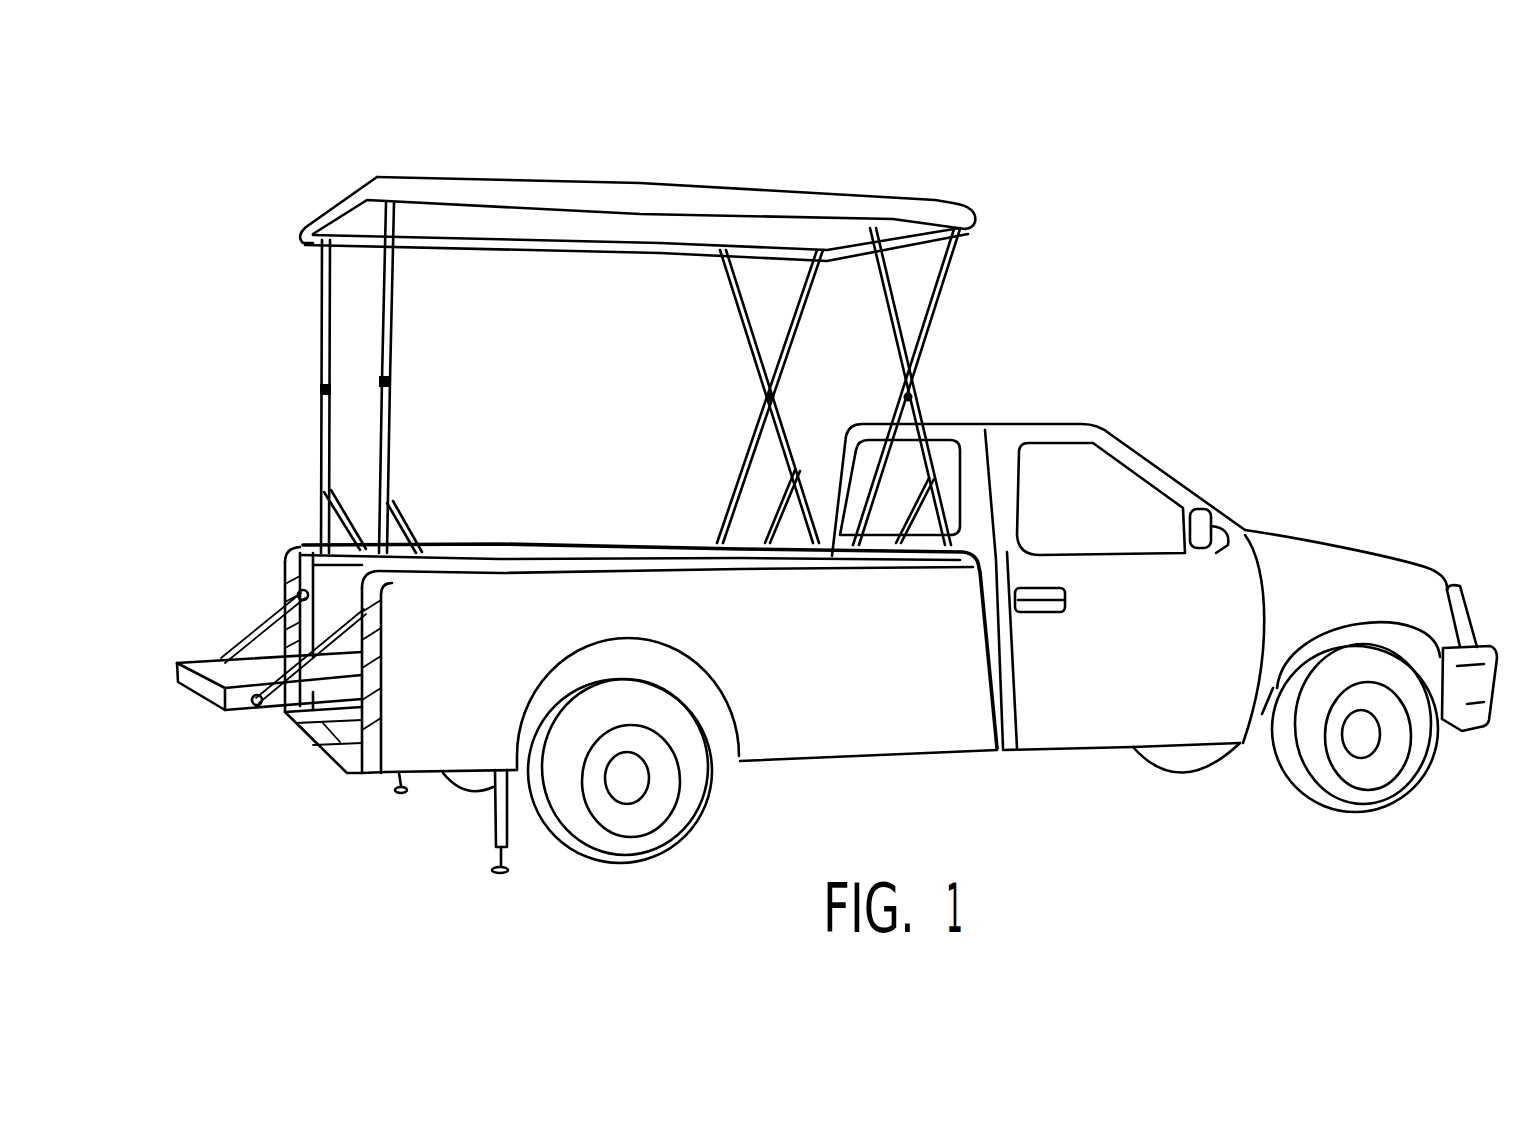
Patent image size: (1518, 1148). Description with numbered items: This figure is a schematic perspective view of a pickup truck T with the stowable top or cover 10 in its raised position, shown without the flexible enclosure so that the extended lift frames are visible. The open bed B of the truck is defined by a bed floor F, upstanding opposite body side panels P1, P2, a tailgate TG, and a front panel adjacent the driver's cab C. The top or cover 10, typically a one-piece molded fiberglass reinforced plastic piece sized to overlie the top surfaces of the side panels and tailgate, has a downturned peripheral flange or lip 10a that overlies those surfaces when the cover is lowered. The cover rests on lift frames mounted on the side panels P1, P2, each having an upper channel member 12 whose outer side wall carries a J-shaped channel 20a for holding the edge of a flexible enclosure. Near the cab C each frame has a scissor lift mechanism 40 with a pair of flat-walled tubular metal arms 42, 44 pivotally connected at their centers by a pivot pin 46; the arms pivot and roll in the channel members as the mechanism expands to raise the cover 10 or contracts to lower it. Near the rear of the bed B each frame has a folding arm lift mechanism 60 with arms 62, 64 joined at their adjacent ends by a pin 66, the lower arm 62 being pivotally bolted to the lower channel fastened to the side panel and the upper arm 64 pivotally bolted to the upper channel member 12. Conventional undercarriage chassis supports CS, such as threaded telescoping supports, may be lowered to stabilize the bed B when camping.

The stowable top or cover 10 is at (745, 183).
The downturned peripheral flange or lip 10a is at (470, 198).
The upper channel member 12 is at (563, 233).
The J-shaped channel 20a is at (898, 212).
The scissor lift mechanism 40 is at (753, 373).
The scissor arm 42 is at (940, 289).
The scissor arm 44 is at (738, 282).
The pivot pin 46 is at (777, 393).
The folding arm lift mechanism 60 is at (391, 420).
The folding arm 62 is at (377, 462).
The folding arm 64 is at (392, 262).
The pin 66 is at (378, 383).
The open bed B is at (548, 553).
The driver's cab C is at (1069, 467).
The truck T is at (1365, 535).
The tailgate TG is at (208, 657).
The bed floor F is at (277, 717).
The undercarriage chassis supports CS is at (493, 840).
The body side panel P1 is at (660, 545).
The body side panel P2 is at (470, 575).